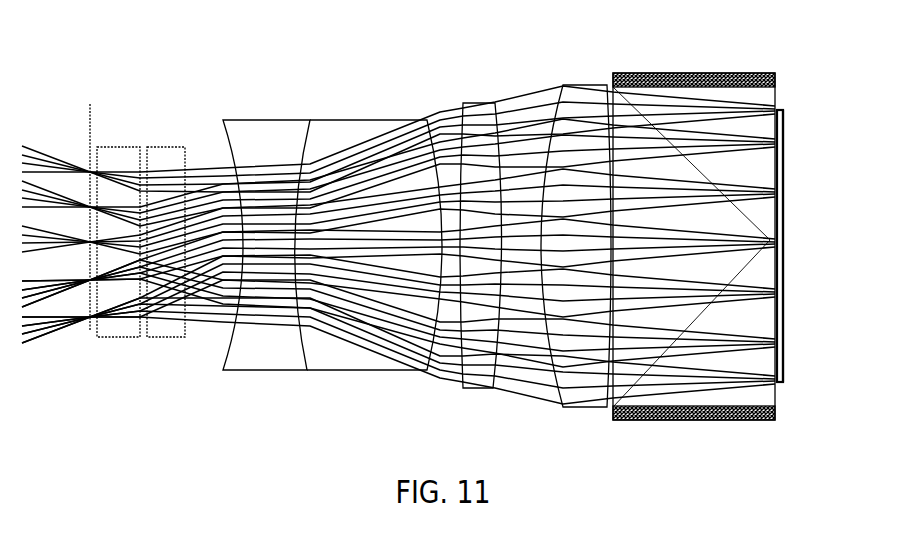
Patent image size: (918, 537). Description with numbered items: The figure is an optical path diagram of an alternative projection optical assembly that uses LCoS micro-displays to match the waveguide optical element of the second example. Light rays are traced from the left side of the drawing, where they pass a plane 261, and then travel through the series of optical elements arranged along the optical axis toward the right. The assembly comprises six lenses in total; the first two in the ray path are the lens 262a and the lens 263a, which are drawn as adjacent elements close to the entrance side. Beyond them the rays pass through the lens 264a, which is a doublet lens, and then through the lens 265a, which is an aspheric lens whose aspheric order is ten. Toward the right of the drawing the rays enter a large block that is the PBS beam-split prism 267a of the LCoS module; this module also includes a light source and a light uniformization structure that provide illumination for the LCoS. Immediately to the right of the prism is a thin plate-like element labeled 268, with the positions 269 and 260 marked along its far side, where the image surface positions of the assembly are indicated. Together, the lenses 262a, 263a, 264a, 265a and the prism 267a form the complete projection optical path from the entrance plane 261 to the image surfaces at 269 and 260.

The optical system 260 is at (802, 313).
The aperture stop 261 is at (87, 105).
The lens 262a is at (122, 337).
The lens 263a is at (163, 160).
The doublet lens 264a is at (303, 370).
The aspheric lens 265a is at (480, 353).
The PBS beam-split prism 267a is at (693, 97).
The display panel 268 is at (760, 83).
The cover plate 269 is at (801, 177).